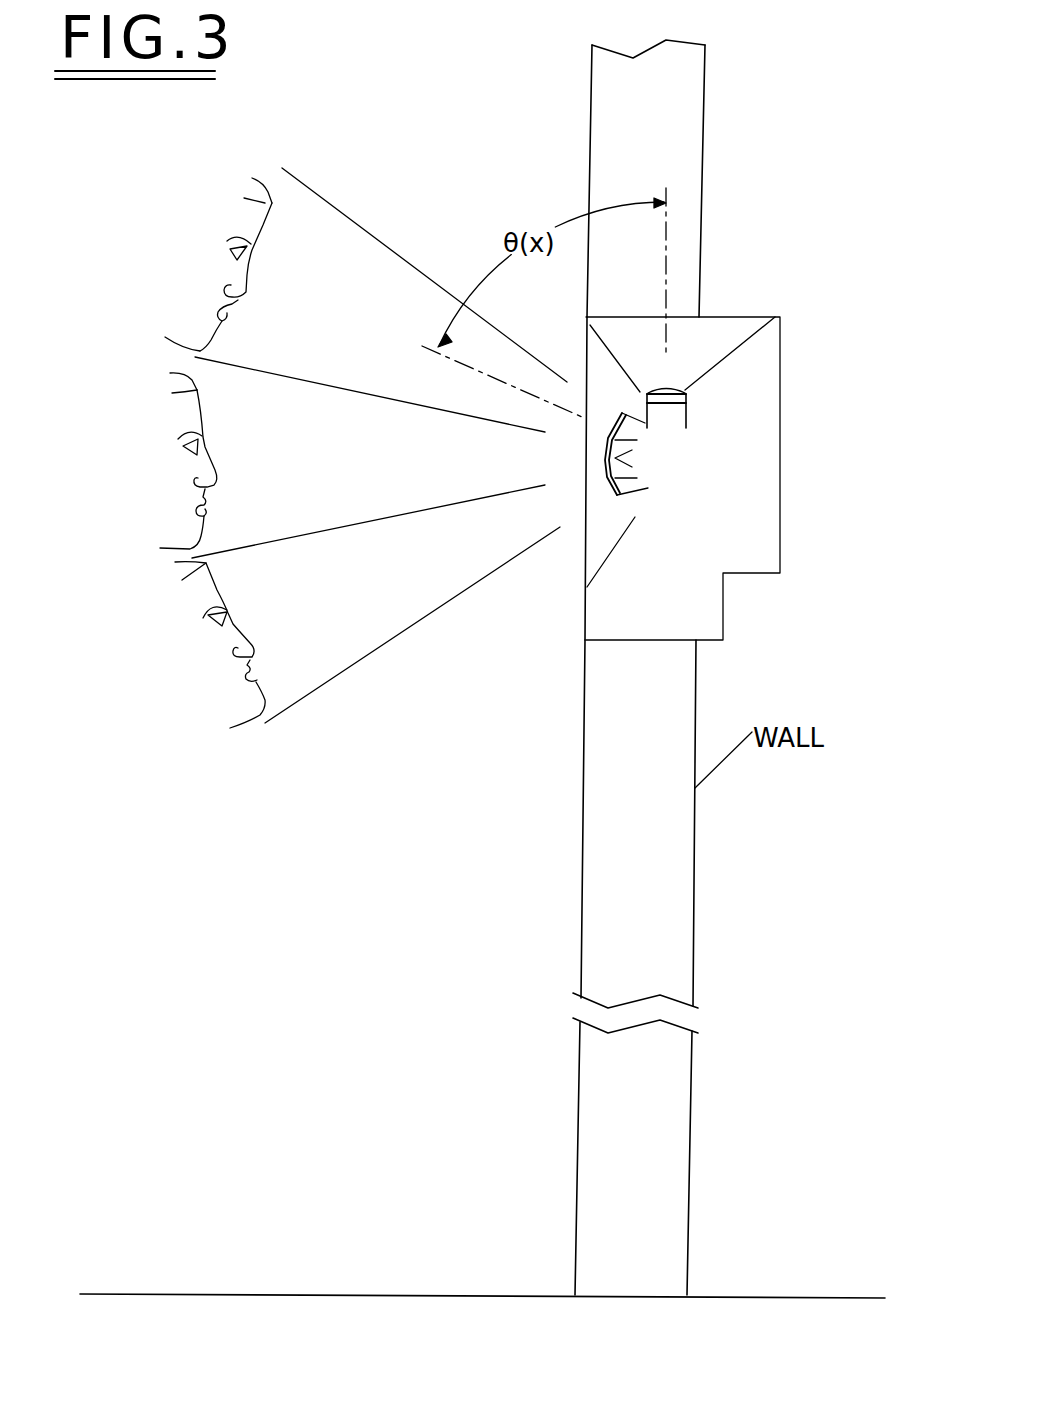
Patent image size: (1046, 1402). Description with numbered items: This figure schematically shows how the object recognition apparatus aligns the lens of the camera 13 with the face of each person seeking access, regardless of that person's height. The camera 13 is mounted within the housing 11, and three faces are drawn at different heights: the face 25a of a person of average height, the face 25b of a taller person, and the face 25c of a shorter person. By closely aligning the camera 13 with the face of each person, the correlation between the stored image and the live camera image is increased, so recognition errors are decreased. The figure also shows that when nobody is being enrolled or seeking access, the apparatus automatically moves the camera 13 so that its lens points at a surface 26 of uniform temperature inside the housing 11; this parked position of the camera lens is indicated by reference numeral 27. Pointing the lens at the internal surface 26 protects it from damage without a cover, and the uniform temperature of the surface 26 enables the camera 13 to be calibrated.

The housing 11 is at (740, 317).
The camera 13 is at (653, 455).
The face of the person with an average height 25a is at (222, 465).
The face of a person with a taller height 25b is at (255, 283).
The face of the person with a shorter height 25c is at (253, 630).
The surface of uniform temperature 26 is at (775, 317).
The position of the camera lens 27 is at (687, 417).